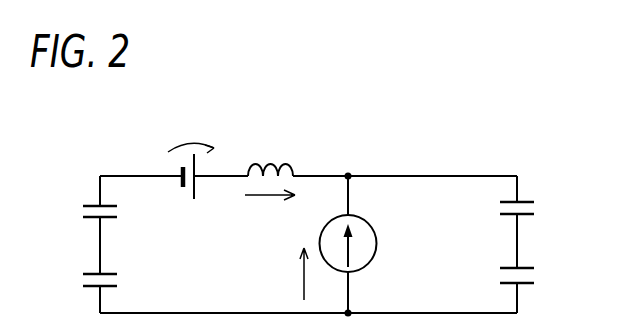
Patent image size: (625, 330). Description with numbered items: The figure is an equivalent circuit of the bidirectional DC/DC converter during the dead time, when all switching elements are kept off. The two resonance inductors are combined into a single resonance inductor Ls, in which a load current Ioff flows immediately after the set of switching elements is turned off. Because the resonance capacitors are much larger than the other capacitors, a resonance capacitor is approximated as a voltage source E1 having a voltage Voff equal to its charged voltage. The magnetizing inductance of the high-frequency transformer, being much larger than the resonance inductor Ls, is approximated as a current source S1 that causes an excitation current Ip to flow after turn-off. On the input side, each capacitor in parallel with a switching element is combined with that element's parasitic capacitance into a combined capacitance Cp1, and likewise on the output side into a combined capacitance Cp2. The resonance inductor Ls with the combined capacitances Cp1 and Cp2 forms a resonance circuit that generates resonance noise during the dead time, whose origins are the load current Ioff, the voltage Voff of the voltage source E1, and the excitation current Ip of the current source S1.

The combined capacitance on input side Cp1 is at (76, 247).
The combined capacitance on output side Cp2 is at (542, 241).
The voltage source E1 is at (189, 194).
The resonance inductor Ls is at (270, 150).
The current source S1 is at (377, 243).
The voltage of the voltage source Voff is at (190, 128).
The load current Ioff is at (269, 213).
The excitation current Ip is at (290, 274).